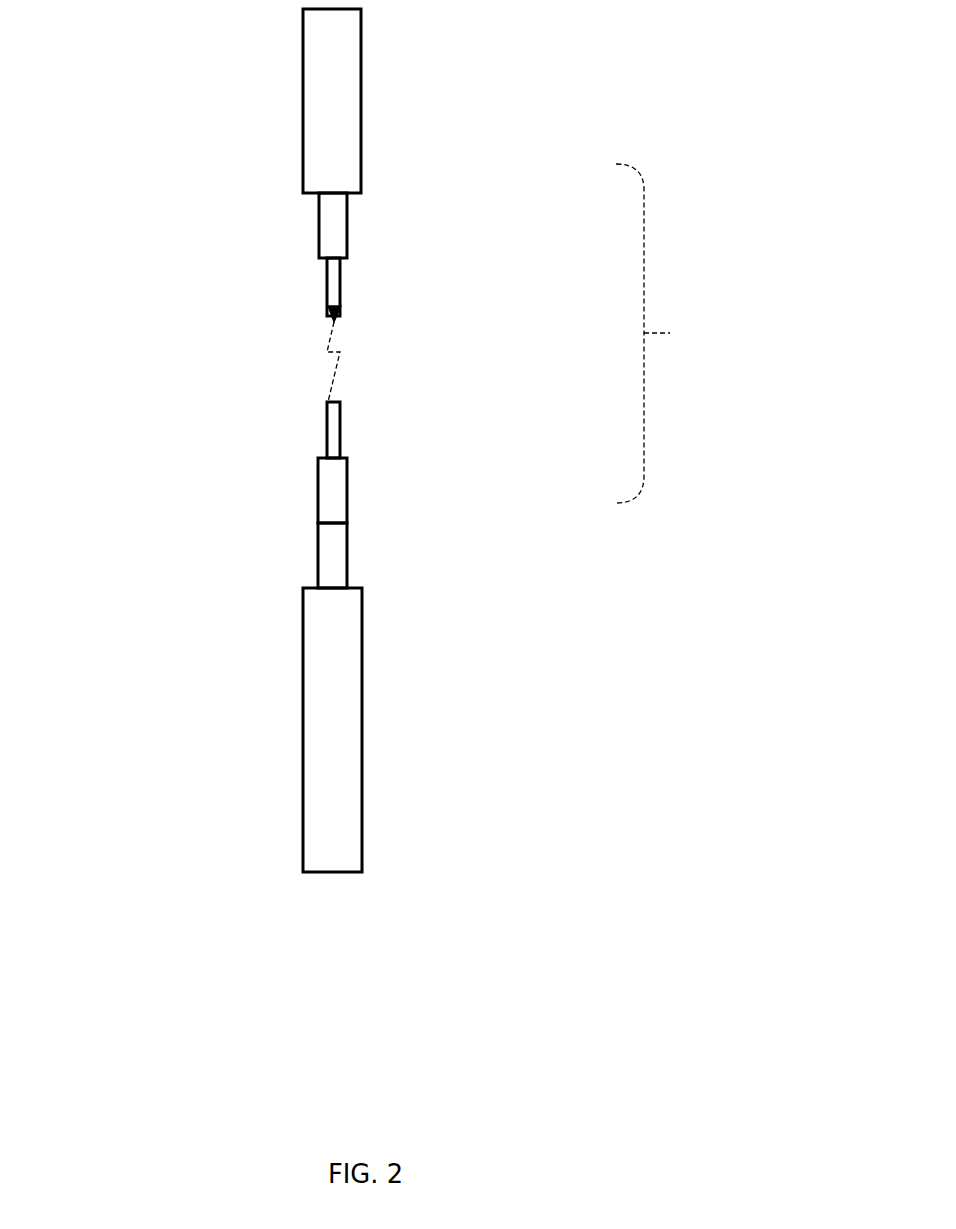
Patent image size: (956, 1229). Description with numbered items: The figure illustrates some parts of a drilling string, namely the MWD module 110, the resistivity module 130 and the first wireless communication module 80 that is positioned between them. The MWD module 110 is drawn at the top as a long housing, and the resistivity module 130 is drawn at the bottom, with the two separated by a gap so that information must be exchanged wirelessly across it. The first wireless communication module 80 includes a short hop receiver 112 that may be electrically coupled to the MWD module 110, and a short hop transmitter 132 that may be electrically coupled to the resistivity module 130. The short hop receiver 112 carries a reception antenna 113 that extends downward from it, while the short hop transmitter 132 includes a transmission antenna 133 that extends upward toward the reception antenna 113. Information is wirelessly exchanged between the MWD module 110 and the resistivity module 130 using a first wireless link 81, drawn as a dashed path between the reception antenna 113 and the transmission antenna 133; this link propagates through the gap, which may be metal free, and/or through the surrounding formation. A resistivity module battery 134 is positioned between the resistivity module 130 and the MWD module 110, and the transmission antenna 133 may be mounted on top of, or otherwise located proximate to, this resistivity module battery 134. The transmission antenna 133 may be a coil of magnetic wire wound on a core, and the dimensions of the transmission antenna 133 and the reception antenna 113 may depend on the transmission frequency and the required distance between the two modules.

The MWD module 110 is at (362, 135).
The short hop receiver 112 is at (347, 226).
The reception antenna 113 is at (340, 282).
The first wireless link 81 is at (327, 352).
The transmission antenna 133 is at (340, 412).
The short hop transmitter 132 is at (347, 508).
The resistivity module battery 134 is at (318, 550).
The resistivity module 130 is at (362, 633).
The first wireless communication module 80 is at (713, 333).